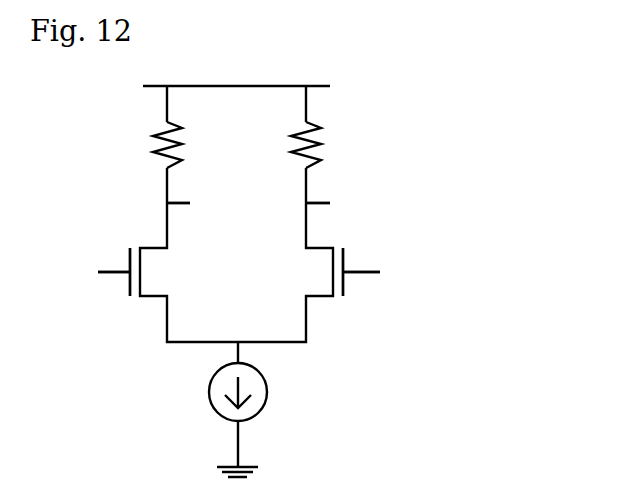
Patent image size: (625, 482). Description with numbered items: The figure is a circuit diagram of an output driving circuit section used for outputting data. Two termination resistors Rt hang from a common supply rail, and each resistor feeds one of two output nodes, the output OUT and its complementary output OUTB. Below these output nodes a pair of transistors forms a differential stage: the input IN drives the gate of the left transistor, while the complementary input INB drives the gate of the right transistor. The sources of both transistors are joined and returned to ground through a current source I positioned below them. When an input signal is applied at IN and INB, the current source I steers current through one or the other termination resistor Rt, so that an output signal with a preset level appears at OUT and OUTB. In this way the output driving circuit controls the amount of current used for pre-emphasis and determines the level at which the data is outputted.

The termination resistor Rt is at (236, 145).
The inverted output OUTB is at (211, 203).
The output OUT is at (348, 203).
The input IN is at (91, 272).
The inverted input INB is at (382, 272).
The current source I is at (221, 392).